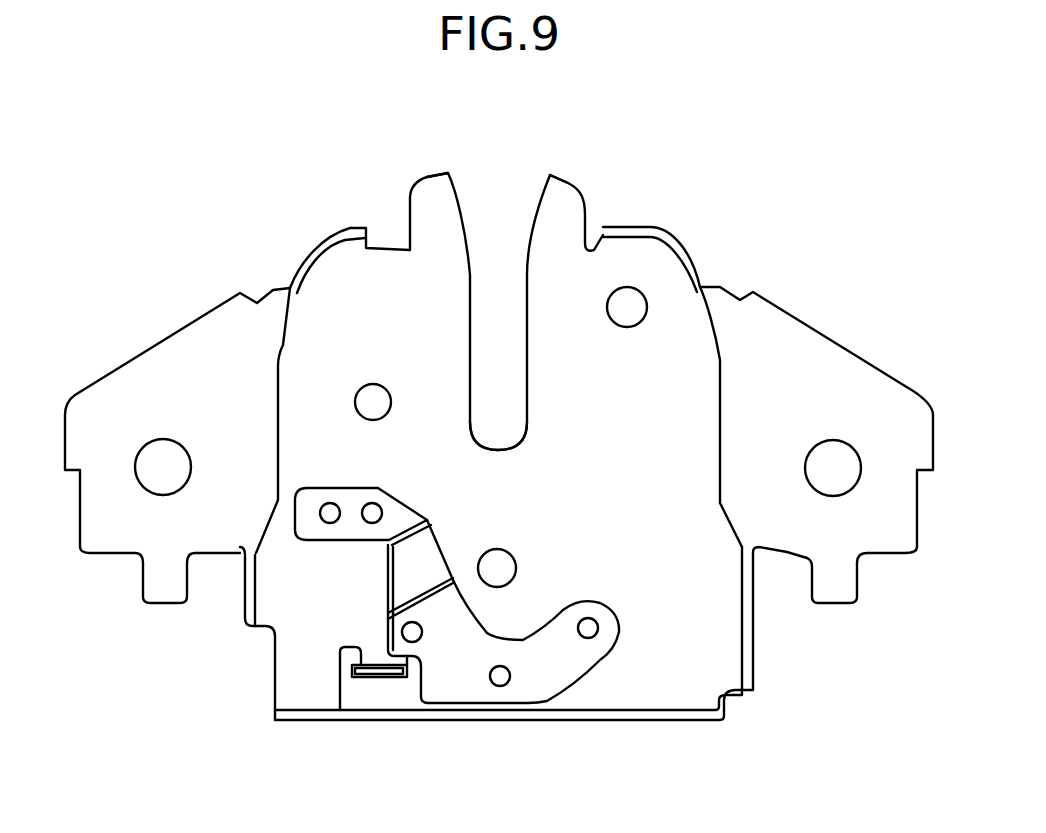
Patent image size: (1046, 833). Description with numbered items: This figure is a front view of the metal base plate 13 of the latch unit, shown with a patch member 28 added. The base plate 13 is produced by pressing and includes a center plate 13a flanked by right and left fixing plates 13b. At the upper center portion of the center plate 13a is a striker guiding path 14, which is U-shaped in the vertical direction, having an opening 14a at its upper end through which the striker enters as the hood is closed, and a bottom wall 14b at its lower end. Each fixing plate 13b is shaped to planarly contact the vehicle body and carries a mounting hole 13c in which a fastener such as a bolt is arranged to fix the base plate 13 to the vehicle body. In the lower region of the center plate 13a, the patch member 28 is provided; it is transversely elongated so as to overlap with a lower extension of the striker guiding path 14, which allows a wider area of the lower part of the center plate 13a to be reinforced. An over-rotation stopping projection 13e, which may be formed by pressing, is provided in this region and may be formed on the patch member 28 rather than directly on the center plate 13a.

The base plate 13 is at (678, 240).
The center plate 13a is at (310, 360).
The fixing plate 13b is at (787, 380).
The mounting hole 13c is at (167, 460).
The over-rotation stopping projection 13e is at (413, 563).
The striker guiding path 14 is at (503, 323).
The opening 14a is at (493, 190).
The bottom wall 14b is at (507, 450).
The patch member 28 is at (477, 653).